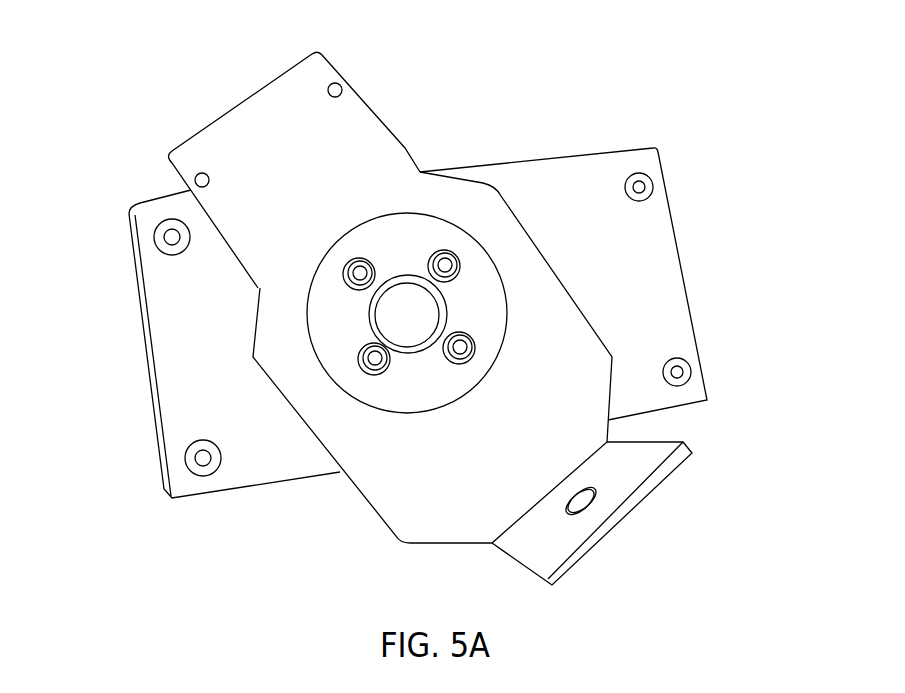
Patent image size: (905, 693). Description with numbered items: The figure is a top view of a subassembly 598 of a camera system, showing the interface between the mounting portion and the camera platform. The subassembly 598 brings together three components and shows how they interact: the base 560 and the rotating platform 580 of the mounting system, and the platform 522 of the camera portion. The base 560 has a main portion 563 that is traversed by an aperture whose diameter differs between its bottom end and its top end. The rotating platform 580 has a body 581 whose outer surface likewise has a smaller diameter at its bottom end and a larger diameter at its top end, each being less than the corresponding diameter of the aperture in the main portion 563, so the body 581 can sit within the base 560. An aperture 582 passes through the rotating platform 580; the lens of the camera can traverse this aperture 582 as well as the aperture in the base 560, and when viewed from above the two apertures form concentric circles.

The subassembly 598 is at (592, 57).
The rotating platform 580 is at (337, 212).
The base 560 is at (523, 150).
The main portion 563 is at (437, 505).
The platform 522 is at (182, 363).
The body 581 is at (347, 305).
The aperture 582 is at (405, 315).